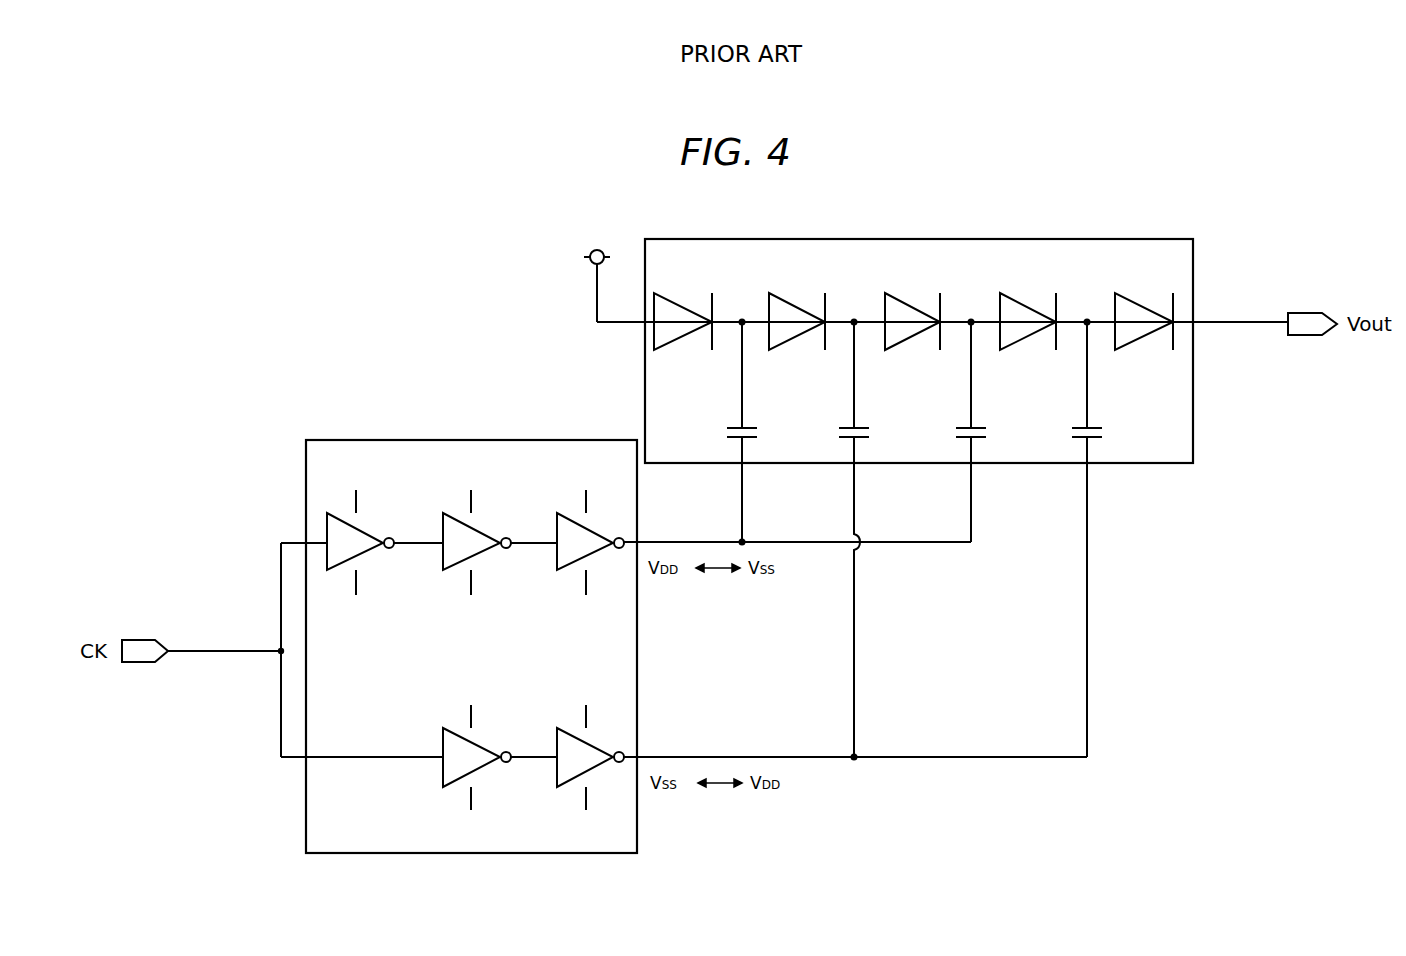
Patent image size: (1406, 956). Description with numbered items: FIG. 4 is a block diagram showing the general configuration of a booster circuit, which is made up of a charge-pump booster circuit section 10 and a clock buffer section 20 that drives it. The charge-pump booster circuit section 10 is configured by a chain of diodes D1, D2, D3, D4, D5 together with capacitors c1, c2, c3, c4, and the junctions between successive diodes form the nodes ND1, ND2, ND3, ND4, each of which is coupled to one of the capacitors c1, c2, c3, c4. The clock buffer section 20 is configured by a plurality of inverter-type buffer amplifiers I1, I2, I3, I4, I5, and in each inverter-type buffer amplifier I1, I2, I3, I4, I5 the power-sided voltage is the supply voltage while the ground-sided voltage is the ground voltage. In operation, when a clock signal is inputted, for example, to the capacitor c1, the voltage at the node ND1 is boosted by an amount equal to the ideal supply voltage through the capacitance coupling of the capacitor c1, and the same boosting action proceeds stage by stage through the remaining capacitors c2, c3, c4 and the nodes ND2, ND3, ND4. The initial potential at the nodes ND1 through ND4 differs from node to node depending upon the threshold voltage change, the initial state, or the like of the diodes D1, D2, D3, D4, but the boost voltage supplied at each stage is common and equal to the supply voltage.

The charge-pump booster circuit section 10 is at (1143, 239).
The clock buffer section 20 is at (357, 853).
The diode D1 is at (683, 321).
The diode D2 is at (797, 321).
The diode D3 is at (912, 321).
The diode D4 is at (1028, 321).
The diode D5 is at (1144, 321).
The capacitor c1 is at (727, 432).
The capacitor c2 is at (839, 539).
The capacitor c3 is at (956, 432).
The capacitor c4 is at (1072, 539).
The node ND1 is at (728, 318).
The node ND2 is at (840, 318).
The node ND3 is at (957, 318).
The node ND4 is at (1073, 318).
The inverter-type buffer amplifier I1 is at (371, 533).
The inverter-type buffer amplifier I2 is at (486, 533).
The inverter-type buffer amplifier I3 is at (600, 533).
The inverter-type buffer amplifier I4 is at (486, 747).
The inverter-type buffer amplifier I5 is at (600, 747).